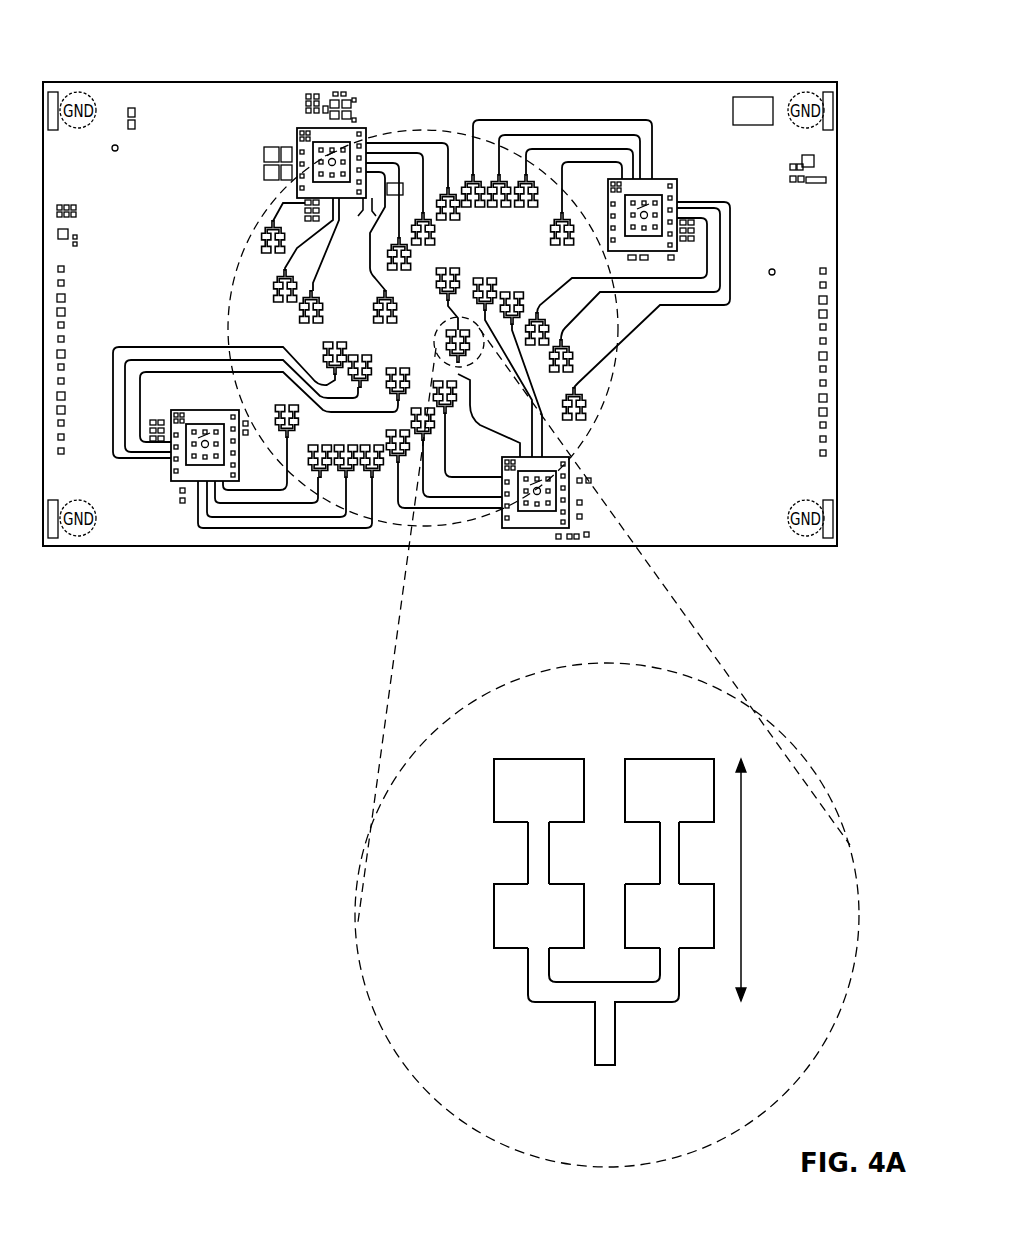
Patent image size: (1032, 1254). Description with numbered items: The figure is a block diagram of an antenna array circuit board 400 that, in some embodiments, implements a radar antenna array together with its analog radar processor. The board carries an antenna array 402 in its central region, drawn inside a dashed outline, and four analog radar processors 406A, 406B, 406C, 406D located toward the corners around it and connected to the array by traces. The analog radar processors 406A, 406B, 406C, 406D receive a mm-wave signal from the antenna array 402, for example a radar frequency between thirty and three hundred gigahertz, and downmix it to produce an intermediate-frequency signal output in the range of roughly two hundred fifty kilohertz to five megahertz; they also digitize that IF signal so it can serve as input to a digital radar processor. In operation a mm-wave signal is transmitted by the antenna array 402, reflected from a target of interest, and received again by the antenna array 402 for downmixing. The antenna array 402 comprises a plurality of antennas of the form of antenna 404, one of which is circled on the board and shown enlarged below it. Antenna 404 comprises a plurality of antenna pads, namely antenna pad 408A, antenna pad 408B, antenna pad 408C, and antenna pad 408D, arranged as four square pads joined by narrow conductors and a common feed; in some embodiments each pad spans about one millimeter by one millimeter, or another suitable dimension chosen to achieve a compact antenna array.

The antenna array circuit board 400 is at (478, 81).
The antenna array 402 is at (607, 394).
The antenna 404 is at (435, 343).
The analog radar processor 406A is at (297, 138).
The analog radar processor 406B is at (680, 192).
The analog radar processor 406C is at (573, 508).
The analog radar processor 406D is at (170, 468).
The antenna pad 408A is at (672, 758).
The antenna pad 408B is at (707, 950).
The antenna pad 408C is at (493, 915).
The antenna pad 408D is at (493, 802).